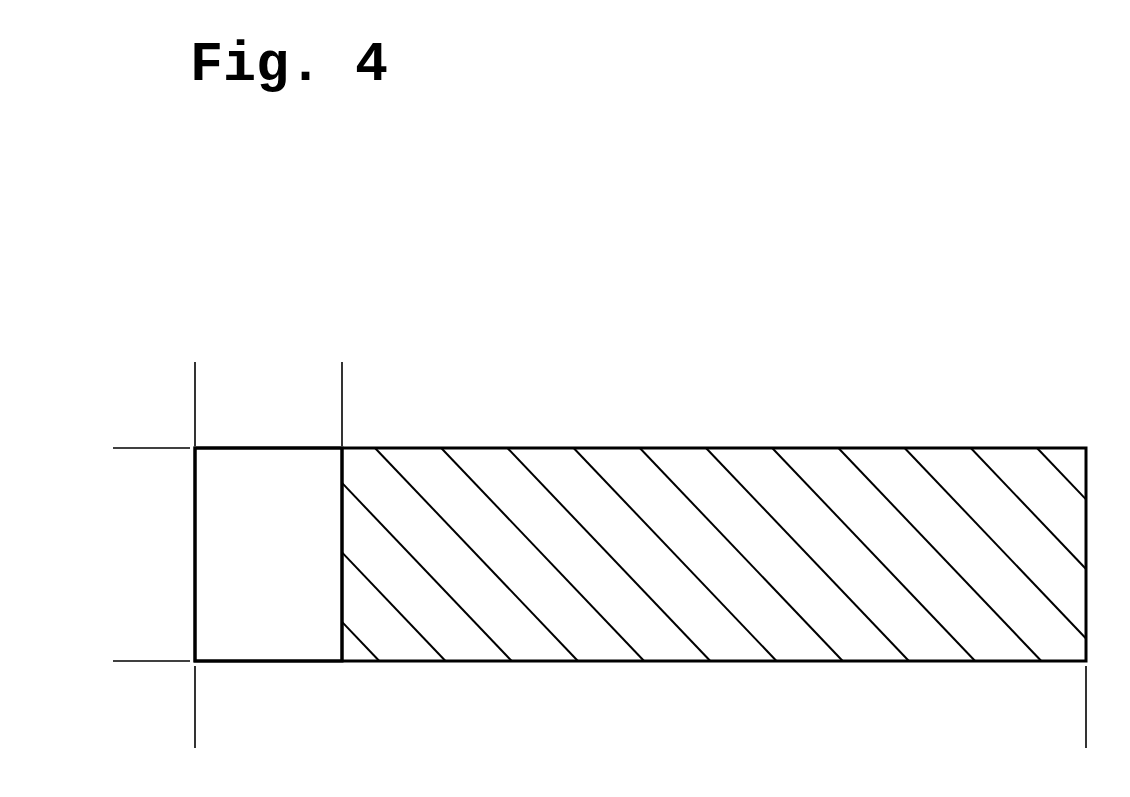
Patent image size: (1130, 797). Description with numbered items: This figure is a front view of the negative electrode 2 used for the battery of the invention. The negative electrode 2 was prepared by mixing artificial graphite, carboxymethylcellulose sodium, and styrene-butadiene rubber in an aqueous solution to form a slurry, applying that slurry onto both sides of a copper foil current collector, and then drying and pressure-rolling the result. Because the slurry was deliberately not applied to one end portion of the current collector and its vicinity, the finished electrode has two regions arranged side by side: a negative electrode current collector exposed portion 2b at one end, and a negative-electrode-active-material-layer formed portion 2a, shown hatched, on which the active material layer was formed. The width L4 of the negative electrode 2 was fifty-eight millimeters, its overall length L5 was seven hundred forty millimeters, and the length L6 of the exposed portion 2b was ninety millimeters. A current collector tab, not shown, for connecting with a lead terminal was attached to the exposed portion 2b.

The negative electrode 2 is at (802, 422).
The negative-electrode-active-material-layer formed portion 2a is at (530, 483).
The negative electrode current collector exposed portion 2b is at (305, 542).
The width of the negative electrode L4 is at (133, 448).
The length of the negative electrode L5 is at (1086, 734).
The length of the negative electrode current collector exposed portion L6 is at (342, 383).